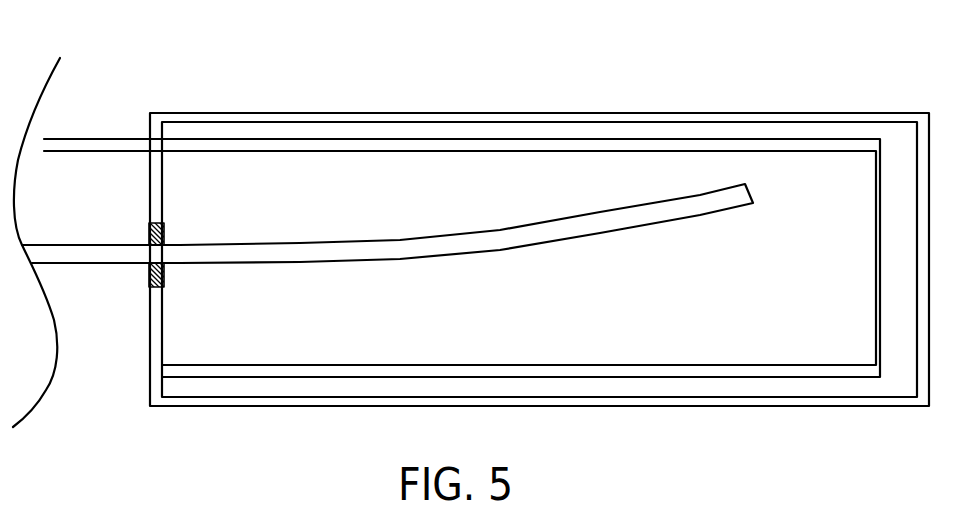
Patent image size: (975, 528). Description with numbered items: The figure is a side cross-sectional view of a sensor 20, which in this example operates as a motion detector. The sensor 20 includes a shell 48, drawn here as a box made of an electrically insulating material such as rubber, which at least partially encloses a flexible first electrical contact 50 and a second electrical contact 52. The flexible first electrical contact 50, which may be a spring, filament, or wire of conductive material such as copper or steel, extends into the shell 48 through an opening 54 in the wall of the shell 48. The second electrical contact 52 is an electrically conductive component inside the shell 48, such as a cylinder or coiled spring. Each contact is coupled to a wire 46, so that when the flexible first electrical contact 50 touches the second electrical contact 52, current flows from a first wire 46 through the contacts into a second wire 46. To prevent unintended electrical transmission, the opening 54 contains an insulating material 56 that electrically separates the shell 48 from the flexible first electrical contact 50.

The sensor 20 is at (161, 50).
The wire 46 is at (95, 153).
The shell 48 is at (637, 113).
The flexible first electrical contact 50 is at (605, 227).
The second electrical contact 52 is at (772, 153).
The opening 54 is at (186, 273).
The insulating material 56 is at (148, 276).